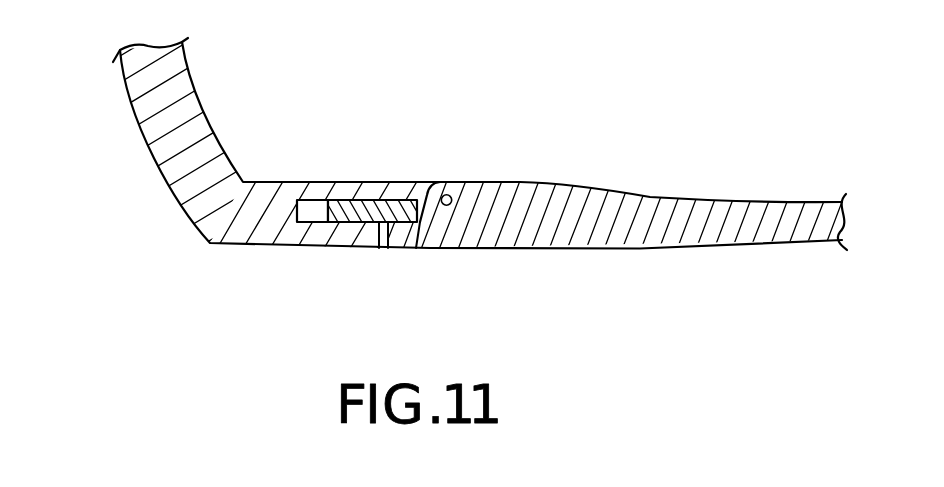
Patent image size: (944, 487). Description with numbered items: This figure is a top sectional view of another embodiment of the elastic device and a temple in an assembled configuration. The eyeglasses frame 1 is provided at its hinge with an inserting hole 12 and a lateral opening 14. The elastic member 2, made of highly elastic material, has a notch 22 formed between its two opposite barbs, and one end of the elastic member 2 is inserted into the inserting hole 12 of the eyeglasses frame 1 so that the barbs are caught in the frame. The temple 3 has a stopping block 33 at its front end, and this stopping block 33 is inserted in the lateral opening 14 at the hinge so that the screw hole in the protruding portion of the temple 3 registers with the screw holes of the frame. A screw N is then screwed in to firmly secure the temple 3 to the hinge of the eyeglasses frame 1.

The eyeglasses frame 1 is at (137, 193).
The inserting hole 12 is at (331, 199).
The notch 22 is at (312, 208).
The elastic member 2 is at (400, 210).
The temple 3 is at (677, 164).
The screw N is at (450, 196).
The lateral opening 14 is at (382, 235).
The stopping block 33 is at (397, 235).